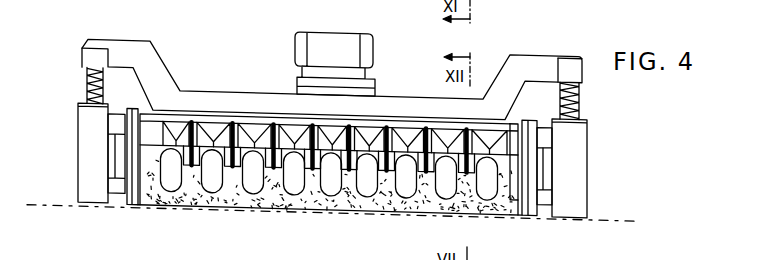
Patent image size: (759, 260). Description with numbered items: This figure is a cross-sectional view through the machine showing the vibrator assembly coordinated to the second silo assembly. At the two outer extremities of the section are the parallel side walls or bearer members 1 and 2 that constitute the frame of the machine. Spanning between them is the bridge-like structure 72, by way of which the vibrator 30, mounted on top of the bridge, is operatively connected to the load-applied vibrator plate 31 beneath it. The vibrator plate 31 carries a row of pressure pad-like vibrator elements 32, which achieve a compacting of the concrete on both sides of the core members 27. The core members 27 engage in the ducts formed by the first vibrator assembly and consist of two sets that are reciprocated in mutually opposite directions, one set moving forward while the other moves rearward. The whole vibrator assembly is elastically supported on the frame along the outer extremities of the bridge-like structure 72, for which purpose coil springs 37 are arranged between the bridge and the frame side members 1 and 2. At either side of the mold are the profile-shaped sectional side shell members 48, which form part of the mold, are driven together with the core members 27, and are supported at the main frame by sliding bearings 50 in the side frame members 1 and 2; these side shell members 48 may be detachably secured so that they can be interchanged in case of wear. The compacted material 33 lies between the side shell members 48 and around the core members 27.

The side wall or bearer member 1 is at (83, 190).
The side wall or bearer member 2 is at (573, 183).
The core member 27 is at (172, 185).
The vibrator 30 is at (333, 42).
The vibrator plate 31 is at (217, 121).
The vibrator element 32 is at (247, 125).
The mould base body 33 is at (330, 202).
The coil spring 37 is at (90, 85).
The side shell member 48 is at (138, 187).
The sliding bearing 50 is at (110, 187).
The bridge-like structure 72 is at (538, 62).